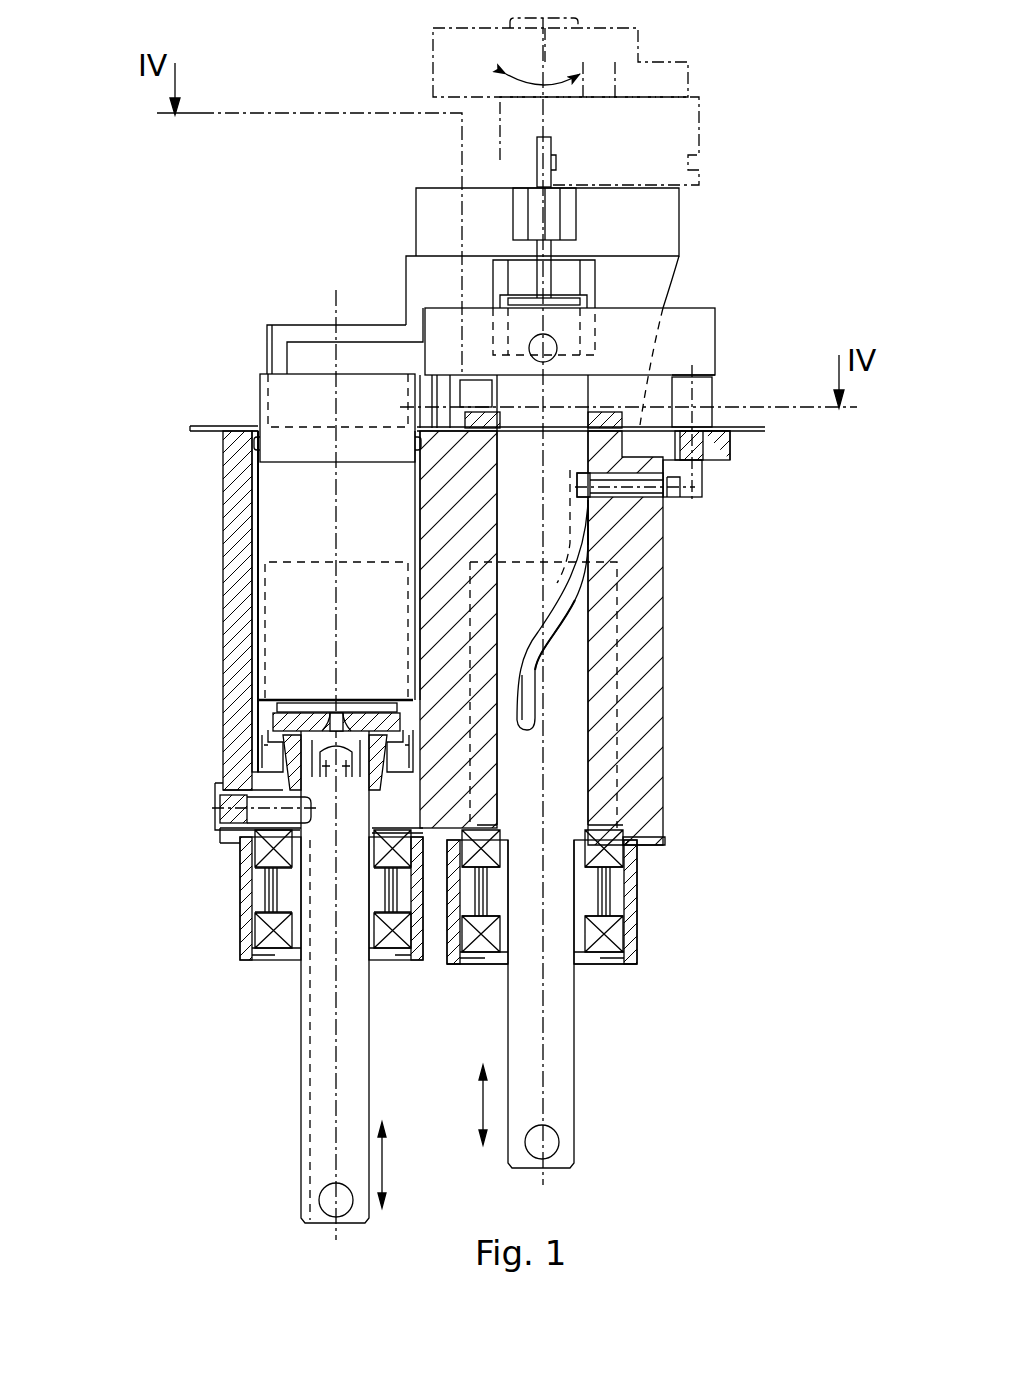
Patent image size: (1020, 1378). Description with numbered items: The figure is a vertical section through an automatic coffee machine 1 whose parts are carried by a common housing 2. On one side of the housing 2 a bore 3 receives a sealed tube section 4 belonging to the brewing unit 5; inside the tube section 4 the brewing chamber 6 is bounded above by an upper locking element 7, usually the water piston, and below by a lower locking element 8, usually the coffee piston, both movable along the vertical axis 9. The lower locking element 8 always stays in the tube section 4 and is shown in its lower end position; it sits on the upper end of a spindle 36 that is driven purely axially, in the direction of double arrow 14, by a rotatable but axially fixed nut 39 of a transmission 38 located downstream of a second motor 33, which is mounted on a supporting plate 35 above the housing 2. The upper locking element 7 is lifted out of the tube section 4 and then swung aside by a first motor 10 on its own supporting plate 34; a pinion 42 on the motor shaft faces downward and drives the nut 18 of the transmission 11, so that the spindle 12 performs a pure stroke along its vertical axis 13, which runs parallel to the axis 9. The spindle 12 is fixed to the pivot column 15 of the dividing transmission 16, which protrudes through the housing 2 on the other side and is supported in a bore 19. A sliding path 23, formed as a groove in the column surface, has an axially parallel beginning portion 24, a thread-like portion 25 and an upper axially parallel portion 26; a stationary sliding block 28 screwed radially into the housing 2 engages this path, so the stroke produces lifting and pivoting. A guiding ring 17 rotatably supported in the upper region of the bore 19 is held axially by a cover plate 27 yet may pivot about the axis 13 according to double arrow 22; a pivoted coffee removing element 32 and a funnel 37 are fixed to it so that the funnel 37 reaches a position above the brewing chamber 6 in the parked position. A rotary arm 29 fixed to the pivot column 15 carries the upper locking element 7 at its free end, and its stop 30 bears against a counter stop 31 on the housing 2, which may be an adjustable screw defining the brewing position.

The automatic coffee machine 1 is at (293, 268).
The common housing 2 is at (238, 468).
The bore 3 is at (252, 515).
The tube section 4 is at (256, 530).
The brewing unit 5 is at (245, 408).
The brewing chamber 6 is at (292, 563).
The upper locking element 7 is at (310, 438).
The lower locking element 8 is at (263, 732).
The vertical axis 9 is at (337, 618).
The first motor 10 is at (640, 848).
The transmission 11 is at (648, 967).
The spindle 12 is at (565, 1102).
The vertical axis 13 is at (542, 1027).
The double arrow 14 is at (382, 1163).
The pivot column 15 is at (620, 818).
The dividing transmission 16 is at (628, 682).
The guiding ring 17 is at (700, 450).
The nut 18 is at (598, 887).
The bore 19 is at (565, 762).
The double arrow 22 is at (545, 83).
The sliding path 23 is at (578, 585).
The beginning portion 24 is at (593, 517).
The thread-like portion 25 is at (578, 615).
The upper parallel portion 26 is at (543, 705).
The cover plate 27 is at (192, 426).
The sliding block 28 is at (637, 487).
The rotary arm 29 is at (677, 318).
The stop 30 is at (700, 372).
The counter stop 31 is at (700, 385).
The pivoted coffee removing element 32 is at (290, 322).
The second motor 33 is at (262, 668).
The supporting plate 34 is at (237, 845).
The supporting plate 35 is at (645, 855).
The spindle 36 is at (318, 1083).
The funnel 37 is at (652, 222).
The transmission 38 is at (228, 940).
The nut 39 is at (284, 889).
The pinion 42 is at (260, 815).